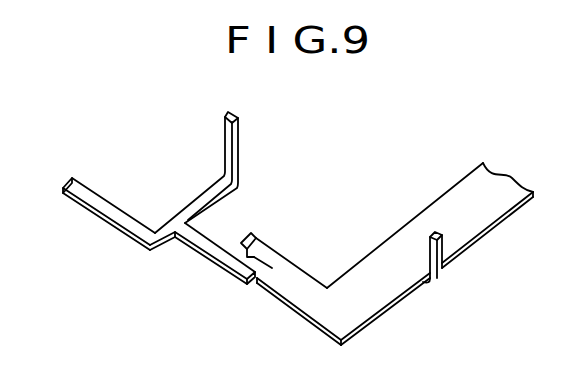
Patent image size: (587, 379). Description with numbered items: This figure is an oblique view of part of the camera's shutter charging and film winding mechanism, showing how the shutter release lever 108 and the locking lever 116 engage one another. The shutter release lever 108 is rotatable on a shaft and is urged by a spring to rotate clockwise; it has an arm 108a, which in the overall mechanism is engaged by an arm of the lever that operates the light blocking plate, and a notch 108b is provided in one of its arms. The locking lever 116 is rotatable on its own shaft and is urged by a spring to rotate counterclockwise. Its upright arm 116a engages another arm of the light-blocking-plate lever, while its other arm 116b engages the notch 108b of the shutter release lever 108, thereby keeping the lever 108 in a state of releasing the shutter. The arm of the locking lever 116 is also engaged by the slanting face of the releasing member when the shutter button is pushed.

The shutter release lever 108 is at (442, 212).
The arm of the shutter release lever 108a is at (443, 251).
The notch 108b is at (261, 251).
The locking lever 116 is at (93, 200).
The upright arm of the locking lever 116a is at (233, 152).
The arm of the locking lever 116b is at (229, 259).